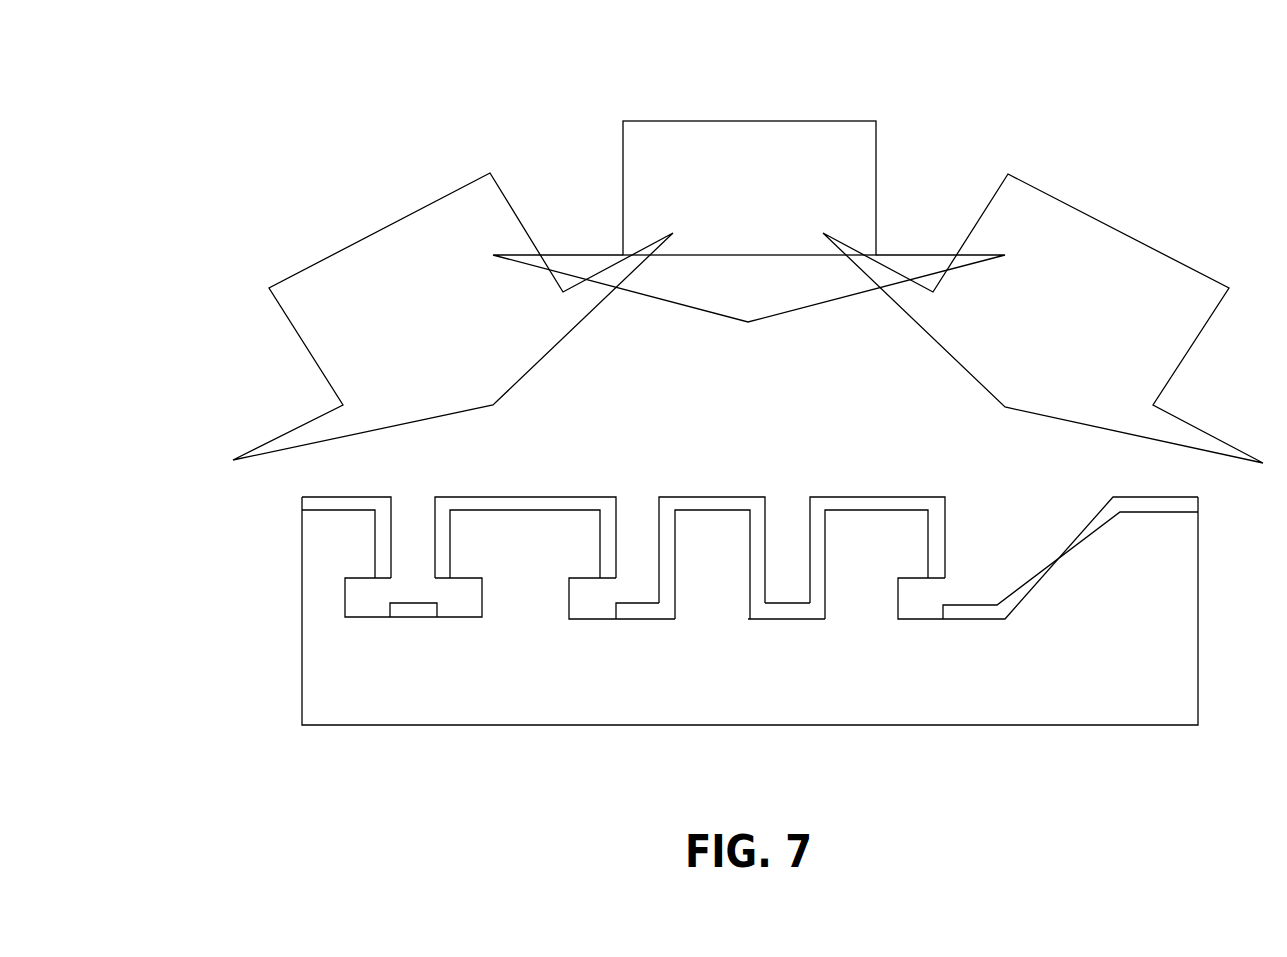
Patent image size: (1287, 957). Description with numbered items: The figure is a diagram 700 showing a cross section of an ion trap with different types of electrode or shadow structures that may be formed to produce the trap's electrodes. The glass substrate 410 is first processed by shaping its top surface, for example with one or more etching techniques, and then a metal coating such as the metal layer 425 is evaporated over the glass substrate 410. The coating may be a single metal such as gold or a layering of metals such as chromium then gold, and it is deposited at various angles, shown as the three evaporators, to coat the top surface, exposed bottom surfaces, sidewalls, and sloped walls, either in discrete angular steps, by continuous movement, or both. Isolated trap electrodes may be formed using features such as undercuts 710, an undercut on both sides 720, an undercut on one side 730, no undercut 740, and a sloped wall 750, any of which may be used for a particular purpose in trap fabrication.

The diagram 700 is at (327, 103).
The glass substrate 410 is at (518, 680).
The metal layer 425 is at (568, 496).
The undercuts 710 is at (367, 602).
The undercut on both sides 720 is at (402, 629).
The undercut on one side 730 is at (607, 629).
The no undercut 740 is at (789, 633).
The sloped wall 750 is at (1003, 624).